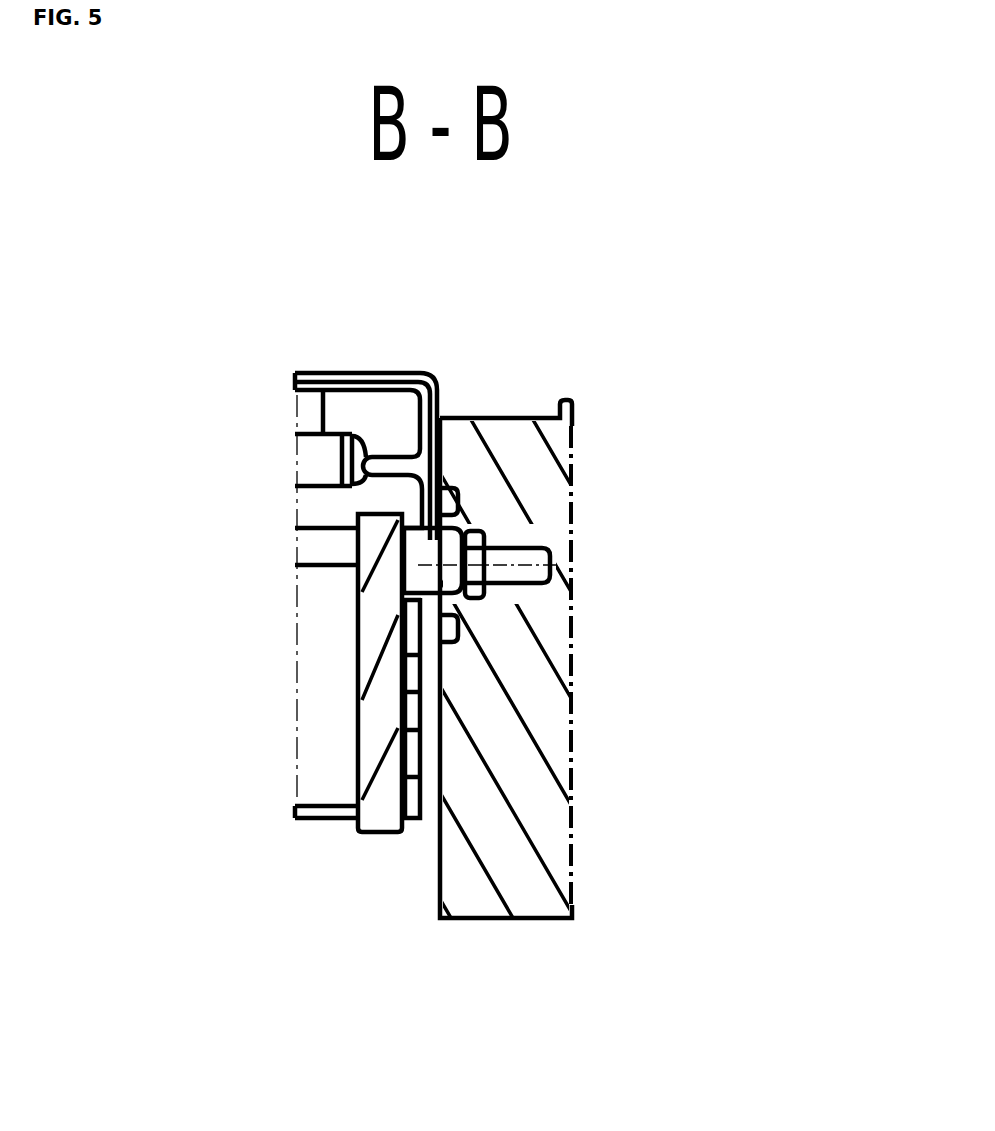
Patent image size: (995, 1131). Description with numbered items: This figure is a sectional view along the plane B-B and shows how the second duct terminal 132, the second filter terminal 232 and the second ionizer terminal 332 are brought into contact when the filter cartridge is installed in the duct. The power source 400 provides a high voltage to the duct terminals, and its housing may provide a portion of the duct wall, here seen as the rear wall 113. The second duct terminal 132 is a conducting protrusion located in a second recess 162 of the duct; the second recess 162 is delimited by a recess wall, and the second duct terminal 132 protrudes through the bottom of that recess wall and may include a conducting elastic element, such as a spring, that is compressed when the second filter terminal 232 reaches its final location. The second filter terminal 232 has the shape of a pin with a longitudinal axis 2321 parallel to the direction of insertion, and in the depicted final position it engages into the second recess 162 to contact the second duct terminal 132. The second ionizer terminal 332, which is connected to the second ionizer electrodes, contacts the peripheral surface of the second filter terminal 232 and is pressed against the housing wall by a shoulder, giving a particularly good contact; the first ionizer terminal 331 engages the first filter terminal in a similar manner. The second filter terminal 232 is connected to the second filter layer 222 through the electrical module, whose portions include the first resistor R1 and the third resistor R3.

The power source 400 is at (527, 887).
The first ionizer terminal 331 is at (437, 390).
The second ionizer terminal 332 is at (452, 530).
The second recess 162 is at (445, 545).
The second duct terminal 132 is at (550, 571).
The second filter terminal 232 is at (470, 530).
The retaining tabs 2321 is at (485, 604).
The rear wall 113 is at (382, 810).
The third resistor R3 is at (415, 673).
The first resistor R1 is at (410, 798).
The second filter layer 222 is at (320, 738).